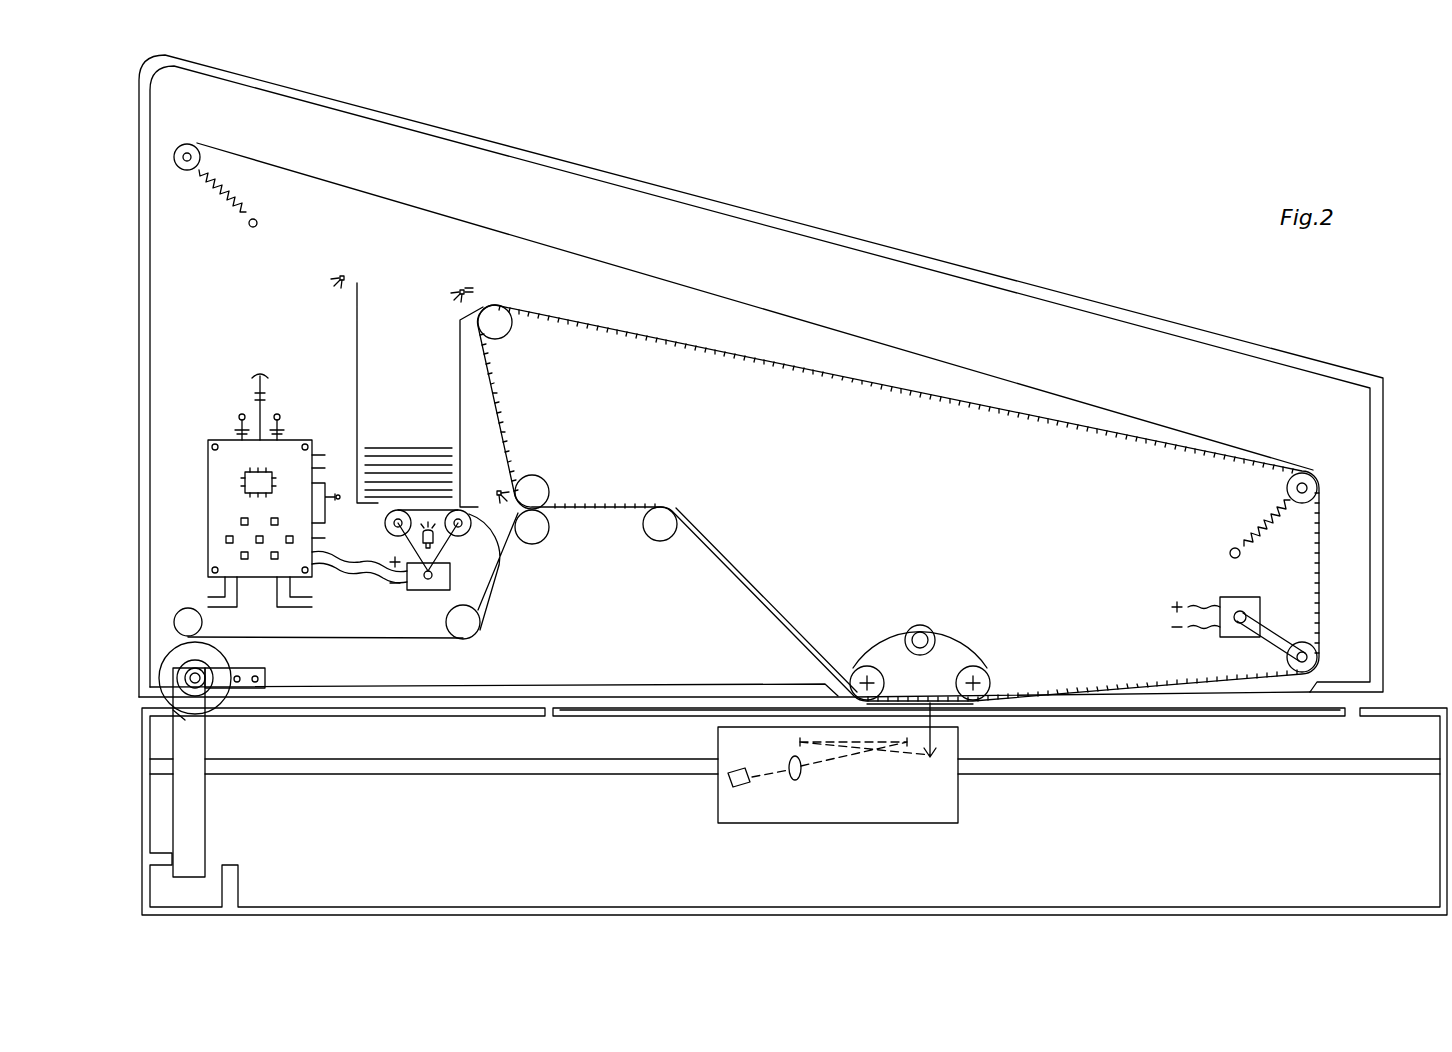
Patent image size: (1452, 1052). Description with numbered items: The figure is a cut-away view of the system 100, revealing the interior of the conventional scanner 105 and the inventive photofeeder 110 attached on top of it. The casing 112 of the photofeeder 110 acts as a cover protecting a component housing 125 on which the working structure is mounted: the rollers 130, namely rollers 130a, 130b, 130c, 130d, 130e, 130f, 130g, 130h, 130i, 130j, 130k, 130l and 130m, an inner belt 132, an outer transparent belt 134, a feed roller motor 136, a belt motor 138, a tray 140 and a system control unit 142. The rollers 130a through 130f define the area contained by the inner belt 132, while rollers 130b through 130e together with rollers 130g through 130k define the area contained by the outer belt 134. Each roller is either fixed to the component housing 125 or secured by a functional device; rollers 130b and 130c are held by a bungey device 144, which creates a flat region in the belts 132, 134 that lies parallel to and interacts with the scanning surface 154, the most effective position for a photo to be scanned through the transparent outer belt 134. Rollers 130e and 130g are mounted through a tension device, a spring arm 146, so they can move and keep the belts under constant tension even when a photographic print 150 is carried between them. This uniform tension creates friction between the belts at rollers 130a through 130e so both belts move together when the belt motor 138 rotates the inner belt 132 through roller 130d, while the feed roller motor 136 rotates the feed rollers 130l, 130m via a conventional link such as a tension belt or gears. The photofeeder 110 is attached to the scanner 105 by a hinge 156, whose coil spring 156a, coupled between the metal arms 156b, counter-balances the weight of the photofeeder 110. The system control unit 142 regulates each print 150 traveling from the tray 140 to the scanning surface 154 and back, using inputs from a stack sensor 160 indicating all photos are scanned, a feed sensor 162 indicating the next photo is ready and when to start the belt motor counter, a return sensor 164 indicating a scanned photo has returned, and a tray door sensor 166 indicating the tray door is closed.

The system 100 is at (1105, 157).
The photofeeder 110 is at (1065, 260).
The casing 112 is at (705, 197).
The scanner 105 is at (1407, 706).
The component housing 125 is at (262, 320).
The rollers 130 is at (325, 637).
The roller 130a is at (541, 483).
The roller 130b is at (866, 668).
The roller 130c is at (985, 667).
The roller 130d is at (1307, 645).
The roller 130e is at (1290, 488).
The roller 130f is at (515, 331).
The roller 130g is at (188, 145).
The roller 130h is at (201, 627).
The roller 130i is at (449, 608).
The roller 130j is at (535, 538).
The roller 130k is at (663, 540).
The roller 130l is at (393, 525).
The roller 130m is at (498, 572).
The inner belt 132 is at (608, 325).
The outer transparent belt 134 is at (430, 211).
The feed roller motor 136 is at (417, 589).
The belt motor 138 is at (1228, 601).
The tray 140 is at (358, 305).
The system control unit 142 is at (225, 453).
The bungey device 144 is at (932, 612).
The spring arm 146 is at (247, 212).
The photographic print 150 is at (430, 428).
The scanning surface 154 is at (1085, 718).
The hinge 156 is at (205, 740).
The coil spring 156a is at (170, 655).
The metal arms 156b is at (266, 676).
The stack sensor 160 is at (434, 540).
The feed sensor 162 is at (497, 491).
The return sensor 164 is at (458, 290).
The tray door sensor 166 is at (343, 276).